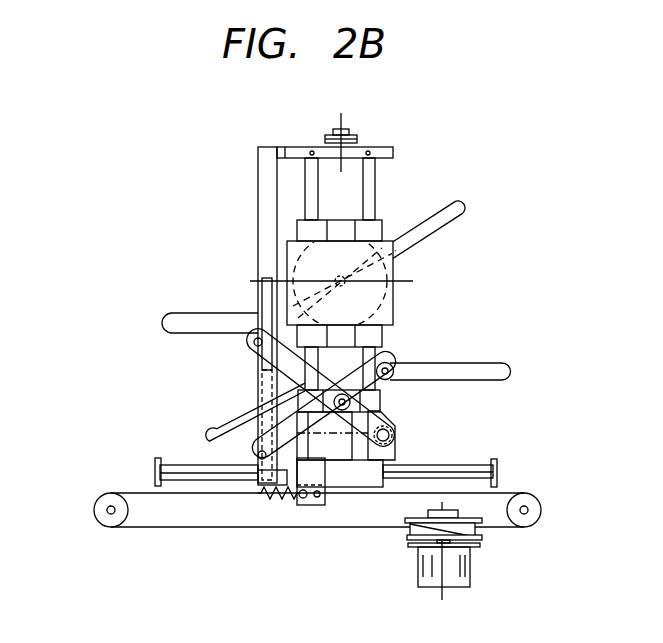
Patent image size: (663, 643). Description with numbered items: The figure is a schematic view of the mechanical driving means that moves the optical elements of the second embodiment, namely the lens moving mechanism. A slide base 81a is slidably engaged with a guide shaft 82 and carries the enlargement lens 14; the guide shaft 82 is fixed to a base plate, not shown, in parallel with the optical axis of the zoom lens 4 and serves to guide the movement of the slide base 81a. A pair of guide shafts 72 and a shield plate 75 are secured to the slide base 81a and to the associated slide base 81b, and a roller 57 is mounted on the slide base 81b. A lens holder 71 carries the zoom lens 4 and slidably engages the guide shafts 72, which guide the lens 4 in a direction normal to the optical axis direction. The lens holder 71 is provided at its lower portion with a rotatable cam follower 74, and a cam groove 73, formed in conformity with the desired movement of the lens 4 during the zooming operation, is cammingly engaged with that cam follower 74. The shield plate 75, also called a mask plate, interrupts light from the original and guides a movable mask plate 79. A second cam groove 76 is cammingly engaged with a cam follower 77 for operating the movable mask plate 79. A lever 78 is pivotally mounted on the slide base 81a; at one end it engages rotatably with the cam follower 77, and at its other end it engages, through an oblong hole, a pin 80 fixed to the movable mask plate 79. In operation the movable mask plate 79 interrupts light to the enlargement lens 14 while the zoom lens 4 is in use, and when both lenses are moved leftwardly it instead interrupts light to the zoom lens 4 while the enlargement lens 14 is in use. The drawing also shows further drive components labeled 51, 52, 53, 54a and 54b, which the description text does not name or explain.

The zoom lens 4 is at (300, 252).
The enlargement lens 14 is at (262, 398).
The motor 51 is at (472, 576).
The drive pulley 52 is at (407, 537).
The belt 53 is at (233, 530).
The pulley 54a is at (105, 495).
The pulley 54b is at (533, 500).
The roller 57 is at (358, 140).
The lens holder 71 is at (378, 221).
The guide shafts 72 is at (318, 186).
The cam groove 73 is at (430, 233).
The cam follower 74 is at (395, 306).
The shield plate 75 is at (258, 174).
The cam groove 76 is at (490, 363).
The cam follower 77 is at (400, 365).
The lever 78 is at (320, 425).
The movable mask plate 79 is at (258, 392).
The pin 80 is at (253, 475).
The slide base 81a is at (392, 455).
The slide base 81b is at (395, 153).
The guide shaft 82 is at (470, 465).